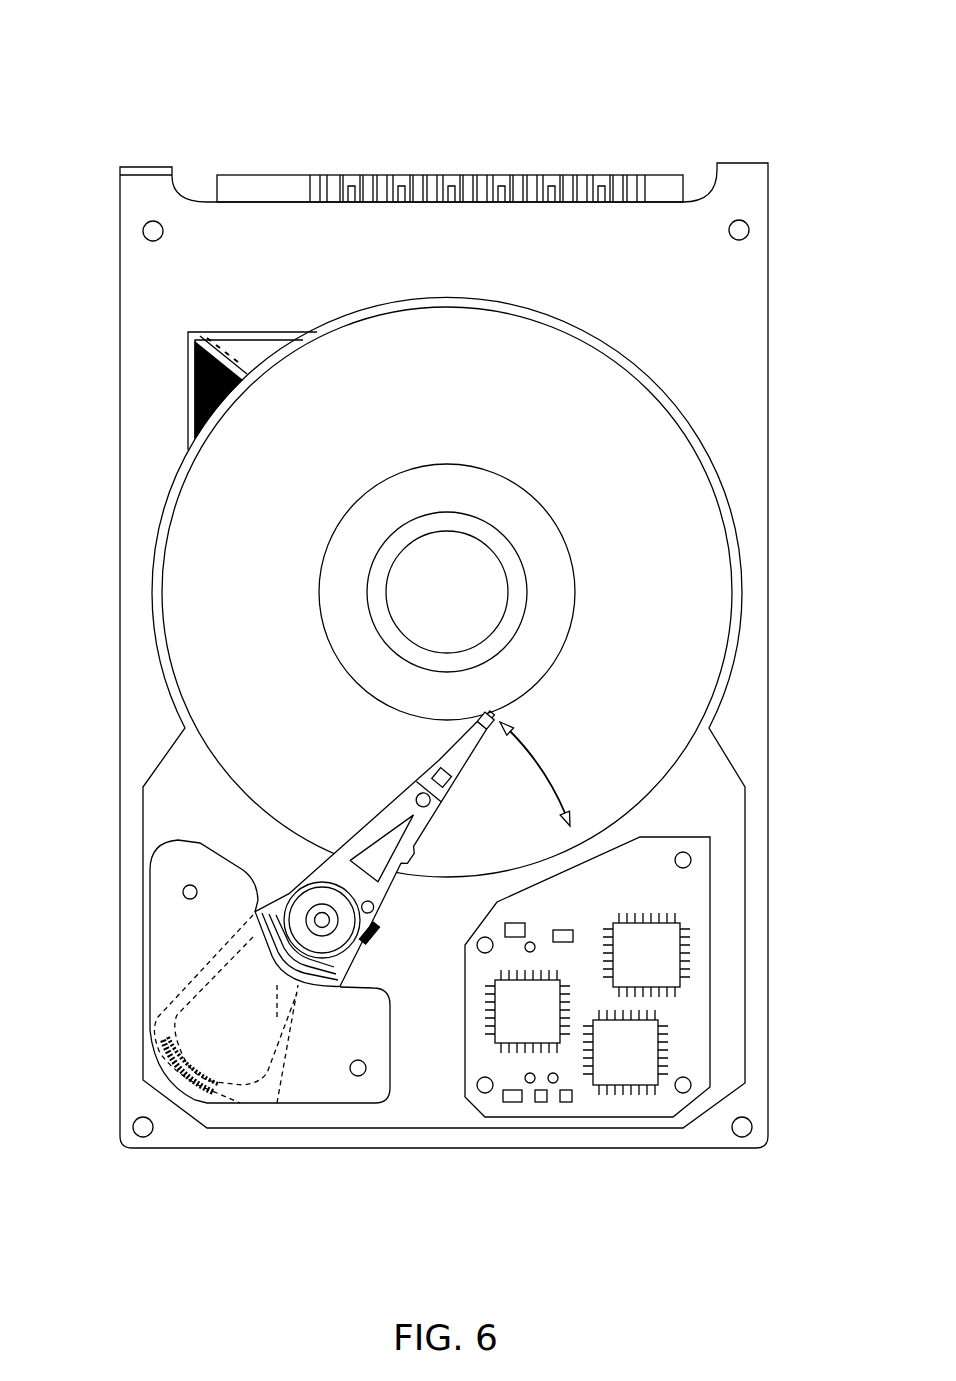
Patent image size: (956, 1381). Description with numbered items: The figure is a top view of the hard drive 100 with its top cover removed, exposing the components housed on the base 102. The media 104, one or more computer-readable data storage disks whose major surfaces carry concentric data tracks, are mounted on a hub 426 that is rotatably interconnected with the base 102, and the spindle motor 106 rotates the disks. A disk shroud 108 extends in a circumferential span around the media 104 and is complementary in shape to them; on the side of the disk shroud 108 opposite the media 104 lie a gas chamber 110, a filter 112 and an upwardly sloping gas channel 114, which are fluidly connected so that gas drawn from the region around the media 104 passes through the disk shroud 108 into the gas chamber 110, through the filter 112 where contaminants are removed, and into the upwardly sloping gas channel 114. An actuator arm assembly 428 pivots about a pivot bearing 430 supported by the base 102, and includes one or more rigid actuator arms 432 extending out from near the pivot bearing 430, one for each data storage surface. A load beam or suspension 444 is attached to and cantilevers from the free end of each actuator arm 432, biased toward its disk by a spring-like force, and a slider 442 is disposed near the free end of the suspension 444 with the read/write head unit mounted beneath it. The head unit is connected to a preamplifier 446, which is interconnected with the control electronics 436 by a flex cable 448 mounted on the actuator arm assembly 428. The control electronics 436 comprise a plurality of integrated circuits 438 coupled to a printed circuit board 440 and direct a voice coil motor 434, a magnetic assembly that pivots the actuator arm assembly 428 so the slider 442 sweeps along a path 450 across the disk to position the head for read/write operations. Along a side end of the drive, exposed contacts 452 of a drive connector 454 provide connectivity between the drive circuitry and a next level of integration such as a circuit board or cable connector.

The hard drive 100 is at (96, 73).
The base 102 is at (143, 668).
The media 104 is at (560, 372).
The spindle motor 106 is at (415, 610).
The disk shroud 108 is at (477, 305).
The gas chamber 110 is at (263, 350).
The filter 112 is at (220, 353).
The upwardly sloping gas channel 114 is at (192, 400).
The hub 426 is at (325, 545).
The actuator arm assembly 428 is at (417, 903).
The pivot bearing 430 is at (300, 922).
The actuator arm 432 is at (330, 875).
The voice coil motor 434 is at (125, 1023).
The control electronics 436 is at (710, 1158).
The integrated circuits 438 is at (653, 952).
The printed circuit board 440 is at (683, 1020).
The slider 442 is at (492, 714).
The suspension 444 is at (450, 760).
The preamplifier 446 is at (375, 945).
The flex cable 448 is at (373, 943).
The path 450 is at (550, 768).
The exposed contacts 452 is at (642, 178).
The drive connector 454 is at (292, 183).